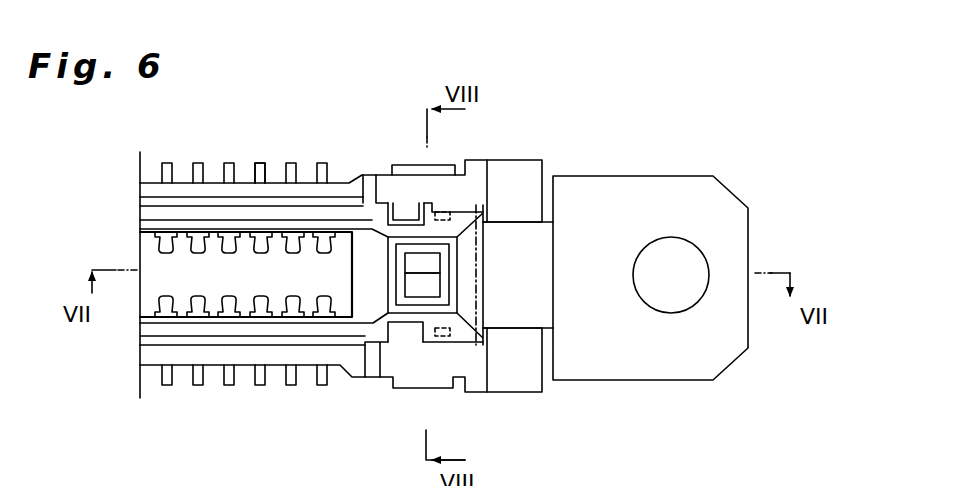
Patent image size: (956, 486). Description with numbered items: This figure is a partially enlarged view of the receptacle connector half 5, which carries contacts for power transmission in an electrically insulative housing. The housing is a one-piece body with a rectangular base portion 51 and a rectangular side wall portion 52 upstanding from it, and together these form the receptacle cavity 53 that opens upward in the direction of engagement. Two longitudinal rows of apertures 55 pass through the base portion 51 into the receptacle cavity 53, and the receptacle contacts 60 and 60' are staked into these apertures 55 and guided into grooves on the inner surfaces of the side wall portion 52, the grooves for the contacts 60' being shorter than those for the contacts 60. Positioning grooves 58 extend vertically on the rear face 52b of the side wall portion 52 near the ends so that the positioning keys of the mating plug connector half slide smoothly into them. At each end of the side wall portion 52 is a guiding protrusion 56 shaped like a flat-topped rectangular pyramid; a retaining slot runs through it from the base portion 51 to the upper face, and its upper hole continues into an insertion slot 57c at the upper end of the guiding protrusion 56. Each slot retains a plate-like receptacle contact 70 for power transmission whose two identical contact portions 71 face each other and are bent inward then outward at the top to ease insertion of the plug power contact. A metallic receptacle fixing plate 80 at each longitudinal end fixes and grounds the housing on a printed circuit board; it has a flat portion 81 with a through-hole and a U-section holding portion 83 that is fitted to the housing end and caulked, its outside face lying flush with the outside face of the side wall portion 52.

The receptacle connector half 5 is at (606, 137).
The base portion 51 is at (152, 275).
The side wall portion 52 is at (338, 335).
The rear face of the side wall portion 52b is at (341, 182).
The receptacle cavity 53 is at (232, 285).
The apertures 55 is at (322, 300).
The guiding protrusion 56 is at (457, 275).
The insertion slot 57c is at (388, 299).
The positioning groove 58 is at (410, 213).
The receptacle contact 60 is at (254, 249).
The receptacle contact 60' is at (264, 148).
The receptacle contact for power transmission 70 is at (434, 264).
The contact portion 71 is at (440, 300).
The receptacle fixing plate 80 is at (631, 384).
The flat portion 81 is at (696, 368).
The holding portion 83 is at (463, 213).